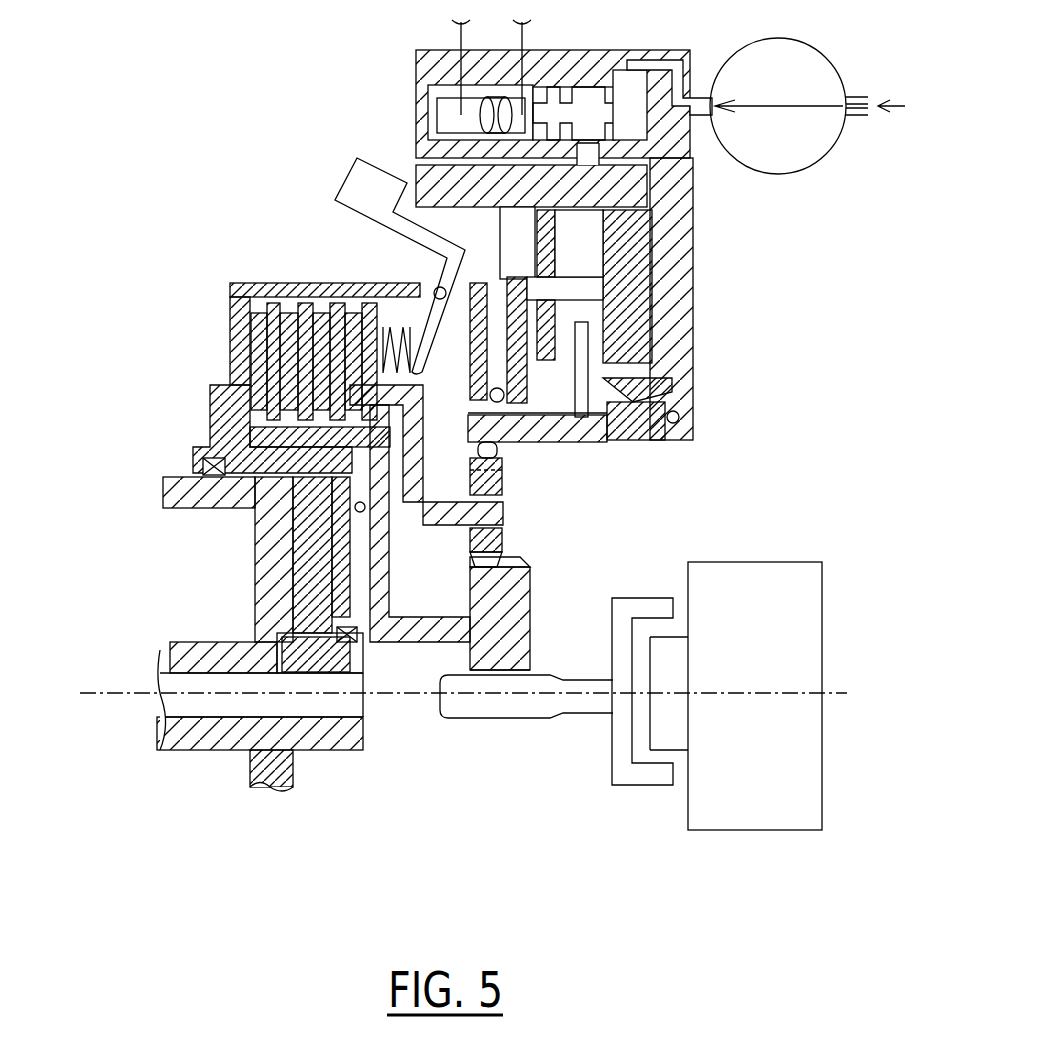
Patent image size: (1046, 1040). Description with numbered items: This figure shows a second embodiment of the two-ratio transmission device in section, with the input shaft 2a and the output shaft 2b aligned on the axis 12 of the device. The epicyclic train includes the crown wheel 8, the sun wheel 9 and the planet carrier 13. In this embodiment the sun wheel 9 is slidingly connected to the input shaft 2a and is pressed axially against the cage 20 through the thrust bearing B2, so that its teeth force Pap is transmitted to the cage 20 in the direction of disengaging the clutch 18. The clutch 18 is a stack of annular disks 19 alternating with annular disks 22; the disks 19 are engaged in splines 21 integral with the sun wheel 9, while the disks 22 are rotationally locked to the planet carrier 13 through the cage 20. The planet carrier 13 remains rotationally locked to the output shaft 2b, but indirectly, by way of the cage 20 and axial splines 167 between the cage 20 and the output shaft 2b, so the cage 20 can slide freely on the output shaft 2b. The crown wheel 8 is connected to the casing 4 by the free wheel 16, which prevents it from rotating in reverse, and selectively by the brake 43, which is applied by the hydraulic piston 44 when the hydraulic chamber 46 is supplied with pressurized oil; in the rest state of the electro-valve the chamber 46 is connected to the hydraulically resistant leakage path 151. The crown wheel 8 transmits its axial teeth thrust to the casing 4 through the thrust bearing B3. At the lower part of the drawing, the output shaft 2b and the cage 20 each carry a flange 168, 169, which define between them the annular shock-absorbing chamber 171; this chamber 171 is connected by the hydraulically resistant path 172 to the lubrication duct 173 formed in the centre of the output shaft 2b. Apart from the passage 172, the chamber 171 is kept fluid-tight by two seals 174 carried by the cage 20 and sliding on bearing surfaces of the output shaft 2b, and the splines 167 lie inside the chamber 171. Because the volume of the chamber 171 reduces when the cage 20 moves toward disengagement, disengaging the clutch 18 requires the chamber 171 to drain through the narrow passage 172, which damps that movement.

The leakage path 151 is at (510, 163).
The casing 4 is at (678, 305).
The hydraulic chamber 46 is at (660, 268).
The hydraulic piston 44 is at (665, 340).
The thrust bearing B3 is at (705, 417).
The free wheel 16 is at (648, 425).
The brake 43 is at (576, 398).
The crown wheel 8 is at (502, 452).
The planet carrier 13 is at (413, 452).
The sun wheel 9 is at (520, 590).
The input shaft 2a is at (580, 715).
The axis 12 is at (762, 693).
The teeth force Pap is at (462, 585).
The cage 20 is at (276, 268).
The clutch 18 is at (240, 342).
The annular disks 22 is at (273, 327).
The annular disks 19 is at (250, 373).
The splines 21 is at (273, 423).
The seals 174 is at (203, 466).
The axial splines 167 is at (262, 488).
The flange 168 is at (270, 577).
The flange 169 is at (257, 613).
The thrust bearing B2 is at (270, 545).
The hydraulically resistant path 172 is at (177, 630).
The shock-absorbing chamber 171 is at (313, 628).
The lubrication duct 173 is at (200, 705).
The output shaft 2b is at (200, 733).